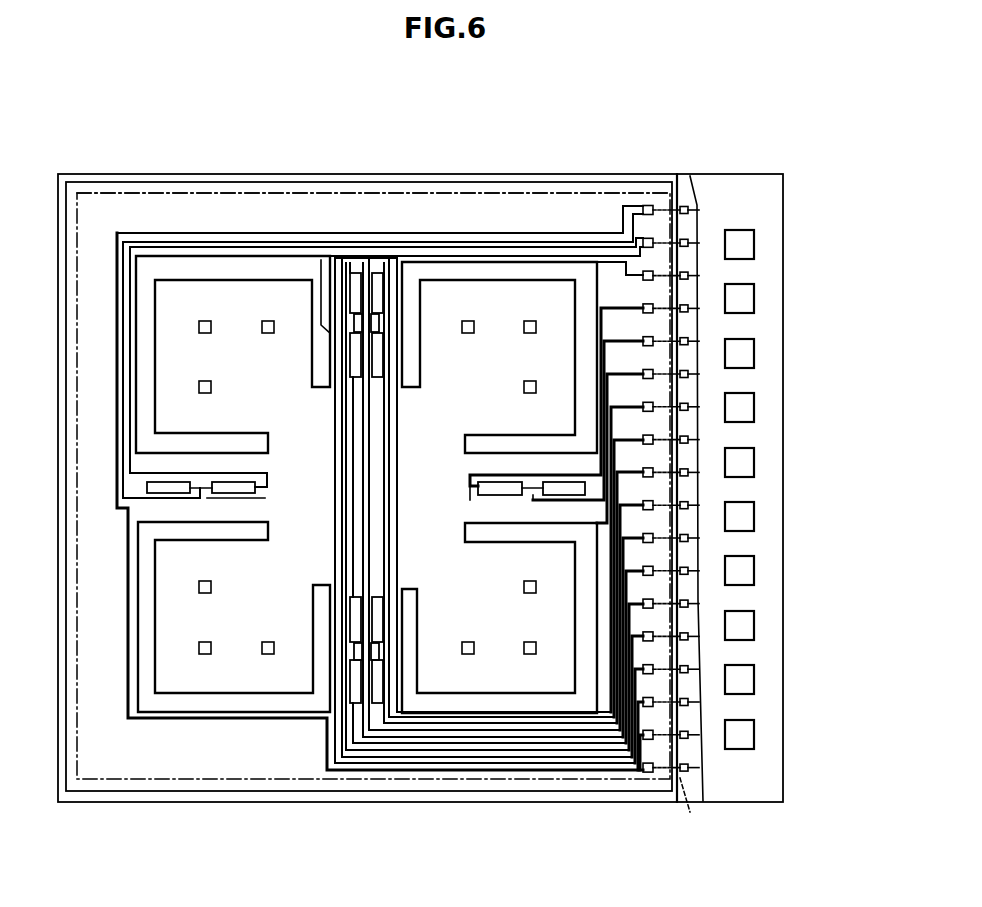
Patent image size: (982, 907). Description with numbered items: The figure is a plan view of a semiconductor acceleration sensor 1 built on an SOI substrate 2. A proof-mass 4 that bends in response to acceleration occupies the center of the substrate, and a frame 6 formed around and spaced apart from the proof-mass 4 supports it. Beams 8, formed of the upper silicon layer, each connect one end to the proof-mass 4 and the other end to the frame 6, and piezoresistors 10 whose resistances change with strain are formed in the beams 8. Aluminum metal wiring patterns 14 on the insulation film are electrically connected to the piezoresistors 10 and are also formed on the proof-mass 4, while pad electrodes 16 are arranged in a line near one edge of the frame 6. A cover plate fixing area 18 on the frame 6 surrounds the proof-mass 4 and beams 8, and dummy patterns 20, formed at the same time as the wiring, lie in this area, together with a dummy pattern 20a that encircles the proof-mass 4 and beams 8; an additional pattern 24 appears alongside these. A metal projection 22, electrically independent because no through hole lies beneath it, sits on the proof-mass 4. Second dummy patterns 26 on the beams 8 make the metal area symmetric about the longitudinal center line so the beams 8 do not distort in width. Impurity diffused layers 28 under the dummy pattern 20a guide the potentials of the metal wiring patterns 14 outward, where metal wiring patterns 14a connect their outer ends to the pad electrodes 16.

The wiring board 1 is at (796, 173).
The SOI substrate 2 is at (730, 174).
The proof-mass 4 is at (430, 440).
The frame 6 is at (765, 200).
The beams 8 is at (319, 327).
The piezoresistors 10 is at (565, 487).
The metal wiring patterns 14 is at (427, 440).
The metal wiring patterns 14a is at (690, 176).
The pad electrodes 16 is at (743, 300).
The cover plate fixing area 18 is at (75, 161).
The dummy patterns 20 is at (176, 256).
The dummy pattern 20a is at (527, 193).
The projection 22 is at (267, 321).
The reference line 24 is at (263, 193).
The second dummy patterns 26 is at (400, 317).
The impurity diffused layers 28 is at (693, 810).